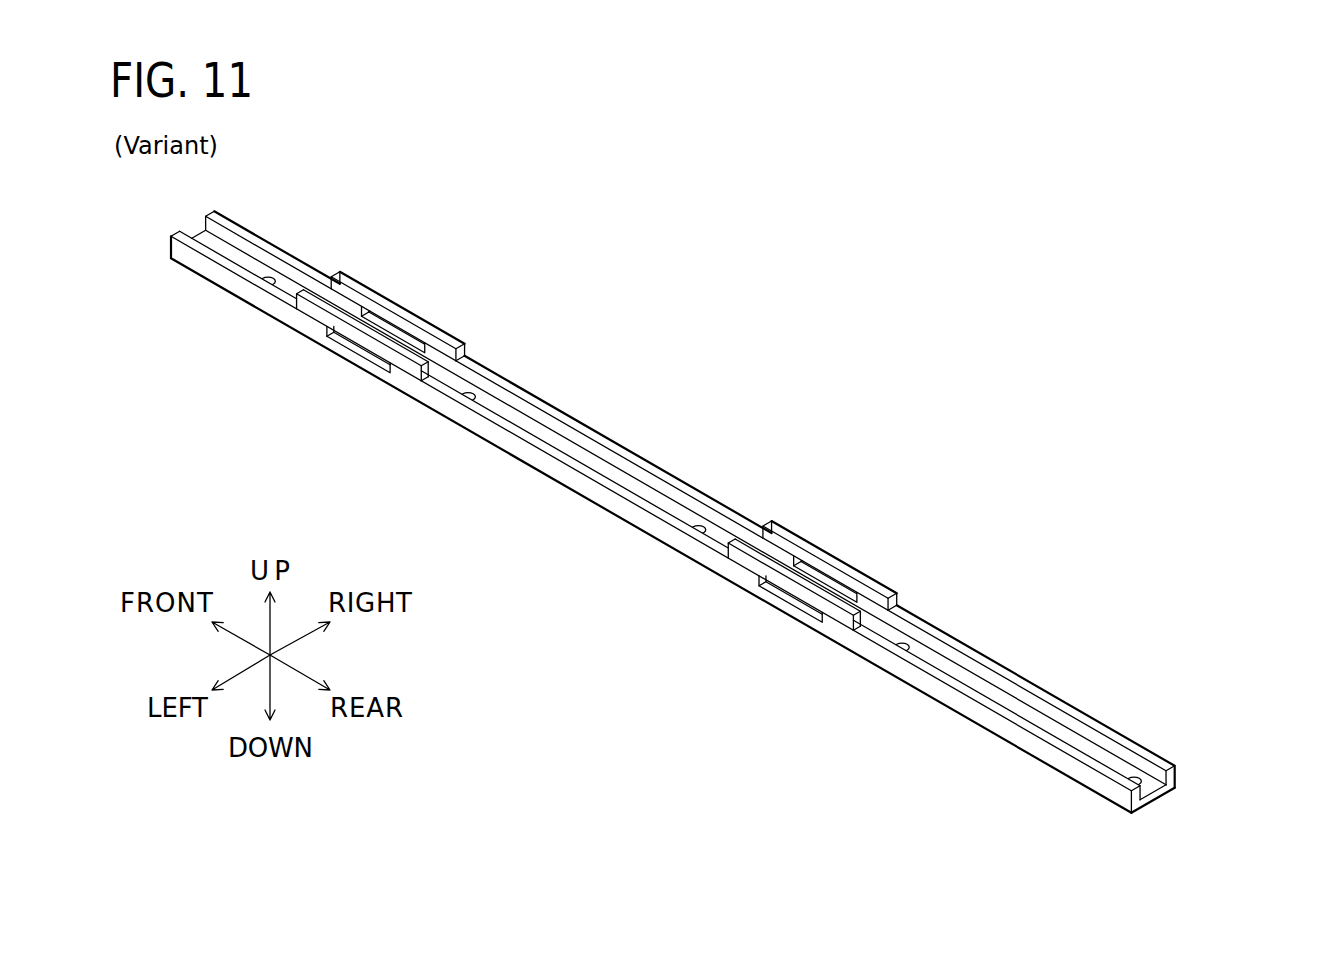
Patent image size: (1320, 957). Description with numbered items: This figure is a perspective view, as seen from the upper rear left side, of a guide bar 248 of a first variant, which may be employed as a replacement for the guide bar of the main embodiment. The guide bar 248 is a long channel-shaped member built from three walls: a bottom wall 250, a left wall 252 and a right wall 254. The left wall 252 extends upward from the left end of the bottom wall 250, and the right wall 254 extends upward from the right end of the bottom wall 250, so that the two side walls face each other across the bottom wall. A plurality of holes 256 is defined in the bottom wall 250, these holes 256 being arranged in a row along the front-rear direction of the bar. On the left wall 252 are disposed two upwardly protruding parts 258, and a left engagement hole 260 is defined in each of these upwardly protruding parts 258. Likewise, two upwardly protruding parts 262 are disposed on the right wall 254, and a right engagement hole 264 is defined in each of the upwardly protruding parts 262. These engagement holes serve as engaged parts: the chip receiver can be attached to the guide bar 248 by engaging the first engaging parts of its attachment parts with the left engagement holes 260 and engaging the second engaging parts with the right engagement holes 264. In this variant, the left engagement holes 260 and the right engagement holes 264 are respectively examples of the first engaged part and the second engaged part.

The guide bar 248 is at (730, 529).
The bottom wall 250 is at (1176, 793).
The left wall 252 is at (1102, 788).
The right wall 254 is at (1092, 738).
The holes 256 is at (1133, 770).
The upwardly protruding parts 258 is at (308, 323).
The left engagement hole 260 is at (355, 357).
The upwardly protruding parts 262 is at (343, 298).
The right engagement hole 264 is at (400, 338).